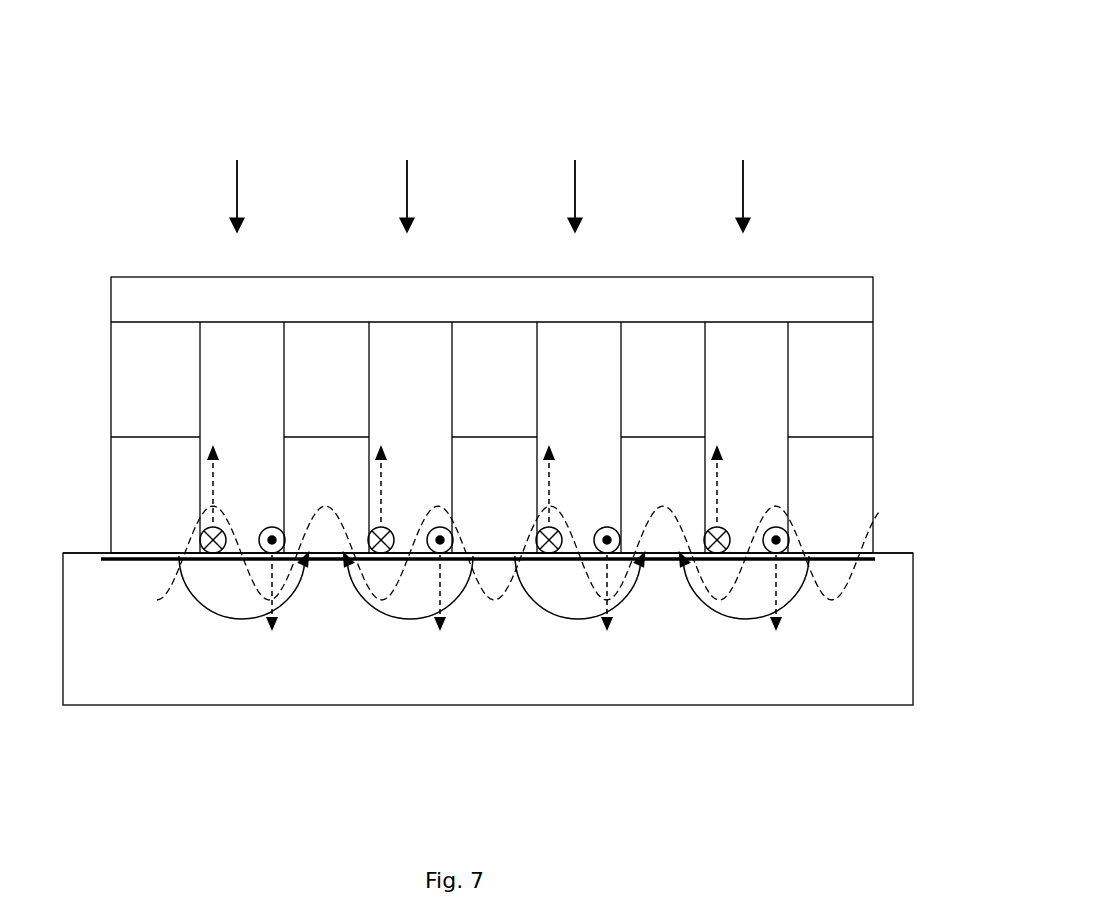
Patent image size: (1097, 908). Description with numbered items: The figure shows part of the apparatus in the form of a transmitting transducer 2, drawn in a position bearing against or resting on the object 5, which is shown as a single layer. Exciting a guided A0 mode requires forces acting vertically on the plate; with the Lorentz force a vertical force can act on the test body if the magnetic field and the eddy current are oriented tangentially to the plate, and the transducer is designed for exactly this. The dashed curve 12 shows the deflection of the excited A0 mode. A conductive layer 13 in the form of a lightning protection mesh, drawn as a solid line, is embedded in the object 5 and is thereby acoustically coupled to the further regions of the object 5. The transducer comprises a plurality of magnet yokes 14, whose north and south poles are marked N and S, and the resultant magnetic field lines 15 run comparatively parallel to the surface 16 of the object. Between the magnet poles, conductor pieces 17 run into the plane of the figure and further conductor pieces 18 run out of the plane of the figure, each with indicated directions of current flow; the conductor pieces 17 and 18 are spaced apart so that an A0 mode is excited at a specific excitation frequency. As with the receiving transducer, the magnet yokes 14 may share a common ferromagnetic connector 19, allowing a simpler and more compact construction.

The magnet arrangement / linear actuator 2 is at (535, 286).
The object 5 is at (866, 684).
The dashed curve 12 is at (850, 587).
The conductive layer 13 is at (137, 561).
The magnet yokes 14 is at (491, 169).
The magnetic field lines 15 is at (226, 613).
The surface 16 is at (77, 551).
The conductor pieces 17 is at (221, 525).
The further conductor pieces 18 is at (272, 526).
The common ferromagnetic connector 19 is at (845, 292).